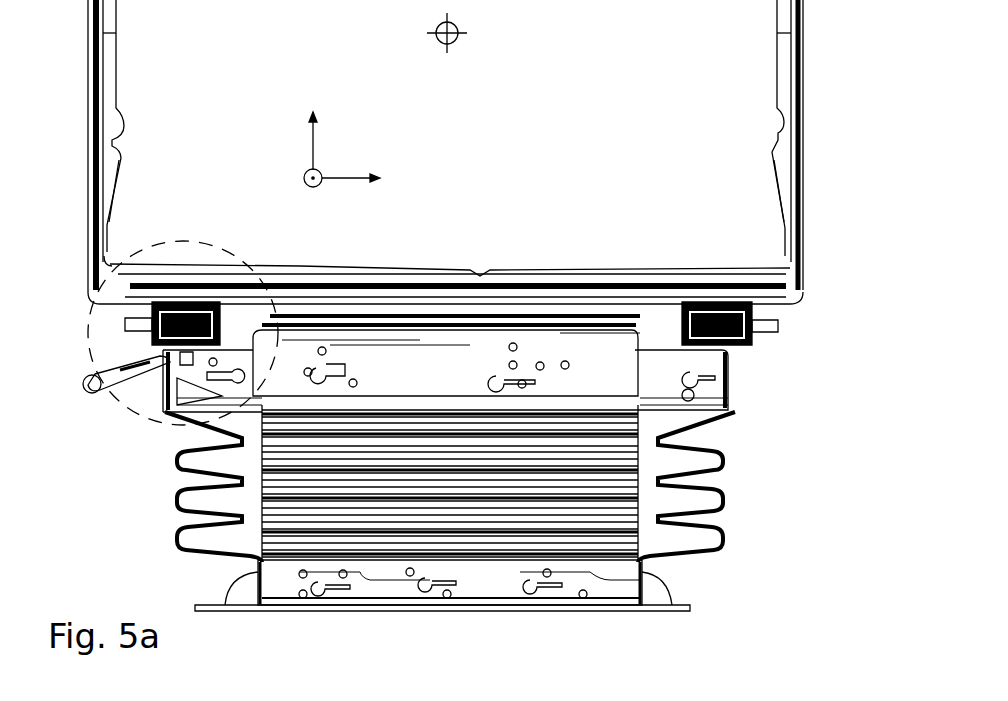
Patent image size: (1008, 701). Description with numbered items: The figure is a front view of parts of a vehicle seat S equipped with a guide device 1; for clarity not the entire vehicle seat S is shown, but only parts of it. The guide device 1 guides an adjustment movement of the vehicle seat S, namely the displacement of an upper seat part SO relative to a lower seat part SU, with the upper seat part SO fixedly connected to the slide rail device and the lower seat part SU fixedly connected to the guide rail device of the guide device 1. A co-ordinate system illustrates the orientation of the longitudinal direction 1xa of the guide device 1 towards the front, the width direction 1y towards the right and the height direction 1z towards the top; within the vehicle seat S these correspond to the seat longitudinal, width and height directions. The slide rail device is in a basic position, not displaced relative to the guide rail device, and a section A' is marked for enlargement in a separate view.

The vehicle seat S is at (828, 78).
The upper seat part SO is at (828, 188).
The lower seat part SU is at (784, 515).
The guide device 1 is at (176, 360).
The section A' is at (154, 333).
The height direction 1z is at (312, 142).
The longitudinal direction 1xa is at (304, 185).
The width direction 1y is at (352, 179).